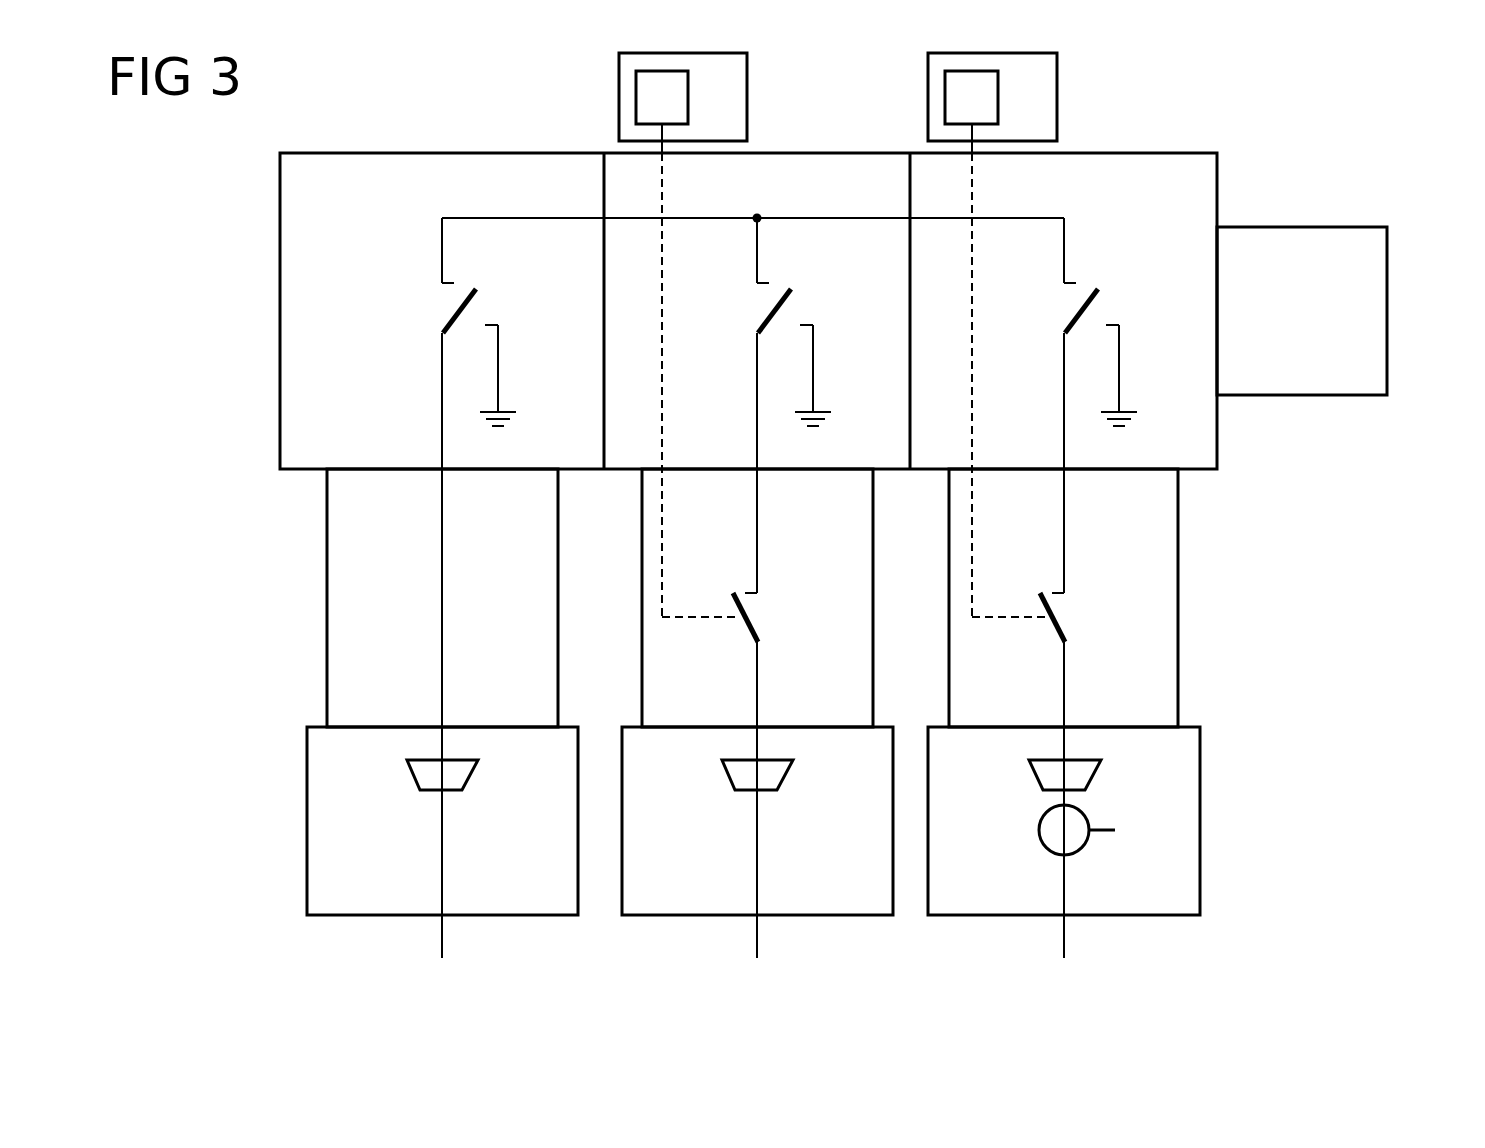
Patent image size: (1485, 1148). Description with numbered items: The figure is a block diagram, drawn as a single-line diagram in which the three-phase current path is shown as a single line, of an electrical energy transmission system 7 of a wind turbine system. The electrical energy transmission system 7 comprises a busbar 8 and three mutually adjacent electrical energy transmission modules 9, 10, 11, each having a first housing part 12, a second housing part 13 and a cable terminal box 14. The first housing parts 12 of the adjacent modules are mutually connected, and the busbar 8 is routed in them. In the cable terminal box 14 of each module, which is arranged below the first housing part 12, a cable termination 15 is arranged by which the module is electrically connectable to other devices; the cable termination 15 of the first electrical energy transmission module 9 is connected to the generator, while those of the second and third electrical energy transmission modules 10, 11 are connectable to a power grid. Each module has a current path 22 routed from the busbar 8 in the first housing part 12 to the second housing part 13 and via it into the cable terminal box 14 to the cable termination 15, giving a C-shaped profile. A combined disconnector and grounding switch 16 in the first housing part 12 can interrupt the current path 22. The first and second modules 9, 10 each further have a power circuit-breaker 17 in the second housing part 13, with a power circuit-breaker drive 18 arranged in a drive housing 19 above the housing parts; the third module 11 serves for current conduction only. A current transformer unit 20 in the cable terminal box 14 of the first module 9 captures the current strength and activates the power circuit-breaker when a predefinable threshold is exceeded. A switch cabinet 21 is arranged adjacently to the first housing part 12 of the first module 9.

The electrical energy transmission system 7 is at (216, 205).
The busbar 8 is at (1033, 218).
The first electrical energy transmission module 9 is at (1133, 131).
The second electrical energy transmission module 10 is at (798, 133).
The third electrical energy transmission module 11 is at (428, 133).
The first housing part 12 is at (1217, 180).
The second housing part 13 is at (1178, 557).
The cable terminal box 14 is at (1200, 828).
The cable termination 15 is at (1097, 775).
The combined disconnector and grounding switch 16 is at (1085, 305).
The power circuit-breaker 17 is at (1047, 622).
The power circuit-breaker drive 18 is at (945, 90).
The drive housing 19 is at (1060, 82).
The current transformer unit 20 is at (1082, 850).
The switch cabinet 21 is at (1387, 280).
The current path 22 is at (1064, 530).